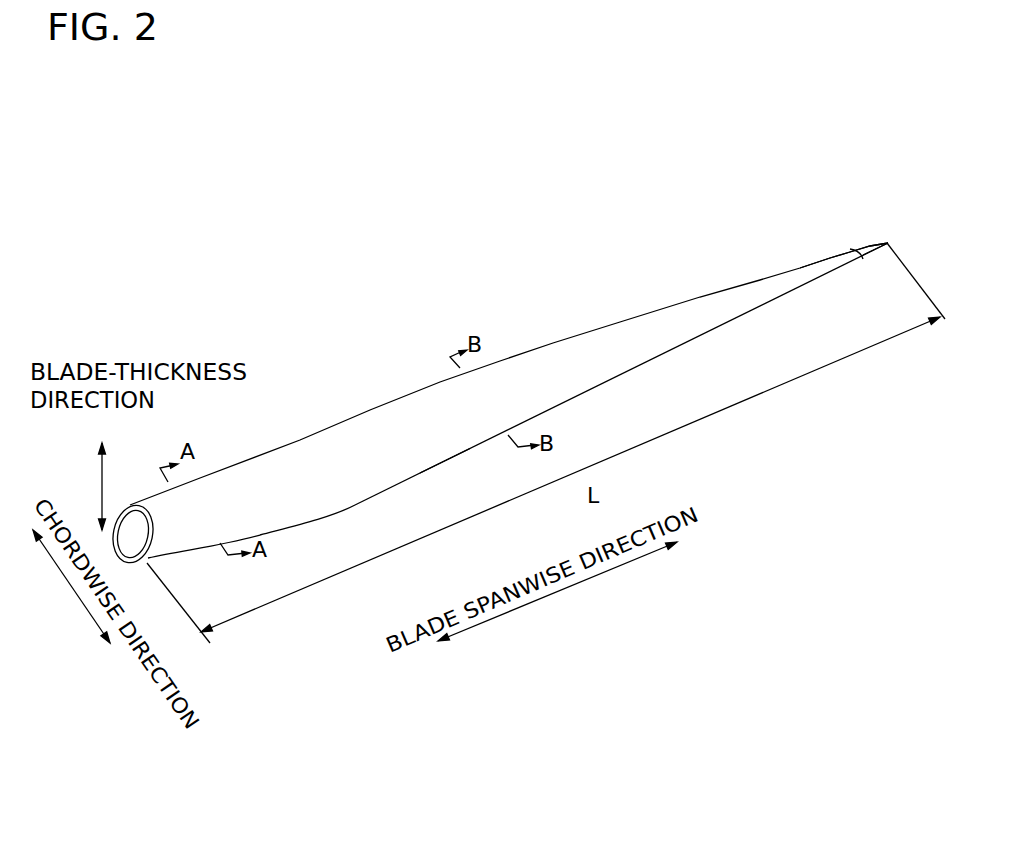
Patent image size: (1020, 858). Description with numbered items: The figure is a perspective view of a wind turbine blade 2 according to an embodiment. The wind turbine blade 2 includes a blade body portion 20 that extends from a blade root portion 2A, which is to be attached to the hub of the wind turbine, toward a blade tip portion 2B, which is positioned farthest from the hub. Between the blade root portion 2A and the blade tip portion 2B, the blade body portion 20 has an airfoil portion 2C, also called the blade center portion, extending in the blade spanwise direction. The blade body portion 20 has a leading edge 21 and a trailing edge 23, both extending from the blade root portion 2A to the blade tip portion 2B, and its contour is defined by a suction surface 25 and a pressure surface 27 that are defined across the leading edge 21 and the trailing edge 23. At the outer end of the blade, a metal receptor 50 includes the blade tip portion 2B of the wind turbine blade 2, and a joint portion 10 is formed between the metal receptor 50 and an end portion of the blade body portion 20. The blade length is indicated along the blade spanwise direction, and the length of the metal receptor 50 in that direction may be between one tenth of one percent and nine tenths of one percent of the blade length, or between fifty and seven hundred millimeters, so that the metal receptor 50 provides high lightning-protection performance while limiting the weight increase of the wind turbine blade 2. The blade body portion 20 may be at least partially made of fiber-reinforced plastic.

The wind turbine blade 2 is at (267, 200).
The blade root portion 2A is at (138, 565).
The blade tip portion 2B is at (887, 242).
The airfoil portion 2C is at (437, 443).
The joint portion 10 is at (843, 242).
The blade body portion 20 is at (509, 358).
The leading edge 21 is at (553, 343).
The trailing edge 23 is at (602, 383).
The suction surface 25 is at (317, 497).
The pressure surface 27 is at (290, 508).
The metal receptor 50 is at (862, 262).